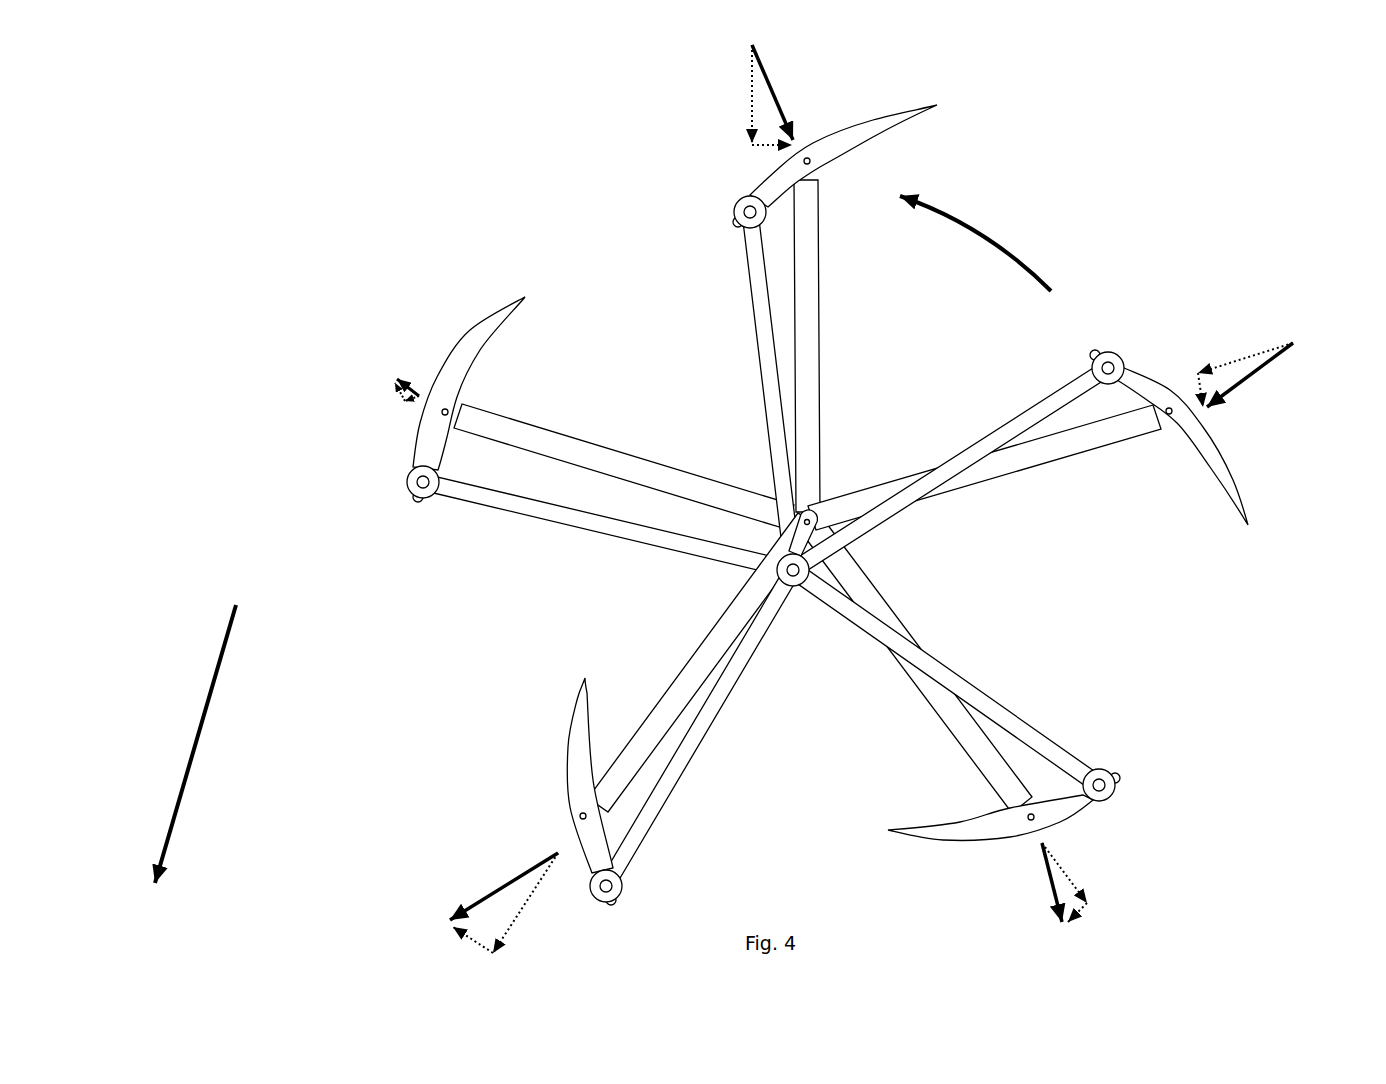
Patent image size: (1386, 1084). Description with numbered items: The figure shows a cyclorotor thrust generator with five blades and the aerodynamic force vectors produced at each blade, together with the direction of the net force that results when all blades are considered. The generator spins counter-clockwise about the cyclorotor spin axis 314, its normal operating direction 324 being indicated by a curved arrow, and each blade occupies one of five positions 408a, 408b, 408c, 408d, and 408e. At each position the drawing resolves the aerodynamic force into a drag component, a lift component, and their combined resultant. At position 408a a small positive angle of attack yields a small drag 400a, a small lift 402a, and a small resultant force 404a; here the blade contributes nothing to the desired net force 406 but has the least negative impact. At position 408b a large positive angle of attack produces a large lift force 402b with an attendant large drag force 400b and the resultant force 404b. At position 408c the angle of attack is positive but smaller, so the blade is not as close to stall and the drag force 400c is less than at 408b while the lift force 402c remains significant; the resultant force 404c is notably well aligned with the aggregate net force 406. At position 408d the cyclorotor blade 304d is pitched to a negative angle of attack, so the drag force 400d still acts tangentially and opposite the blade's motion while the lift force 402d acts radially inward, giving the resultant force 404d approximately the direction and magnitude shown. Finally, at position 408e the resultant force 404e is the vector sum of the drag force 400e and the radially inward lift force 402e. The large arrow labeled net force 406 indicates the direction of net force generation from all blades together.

The cyclorotor blade 304d is at (1246, 500).
The spin axis 314 is at (816, 512).
The normal operating direction 324 is at (995, 232).
The drag component 400a is at (388, 386).
The drag force 400b is at (470, 942).
The drag force 400c is at (1085, 922).
The drag force 400d is at (1187, 391).
The drag force 400e is at (772, 150).
The lift component 402a is at (402, 405).
The lift force 402b is at (532, 910).
The lift force 402c is at (1070, 870).
The lift force 402d is at (1232, 362).
The lift force 402e is at (745, 100).
The resultant force 404a is at (417, 392).
The resultant force 404b is at (494, 880).
The resultant force 404c is at (1046, 884).
The resultant force 404d is at (1255, 378).
The resultant force 404e is at (777, 92).
The net force 406 is at (223, 668).
The position 408a is at (601, 437).
The position 408b is at (655, 709).
The position 408c is at (954, 676).
The position 408d is at (1065, 463).
The position 408e is at (861, 338).